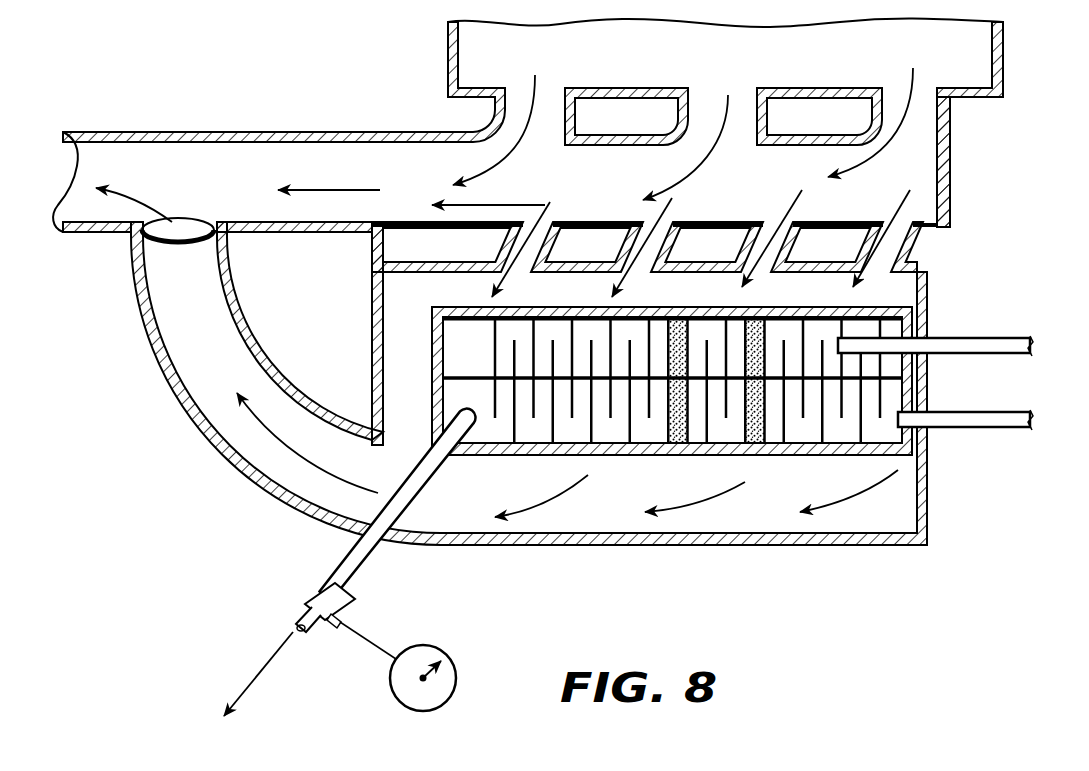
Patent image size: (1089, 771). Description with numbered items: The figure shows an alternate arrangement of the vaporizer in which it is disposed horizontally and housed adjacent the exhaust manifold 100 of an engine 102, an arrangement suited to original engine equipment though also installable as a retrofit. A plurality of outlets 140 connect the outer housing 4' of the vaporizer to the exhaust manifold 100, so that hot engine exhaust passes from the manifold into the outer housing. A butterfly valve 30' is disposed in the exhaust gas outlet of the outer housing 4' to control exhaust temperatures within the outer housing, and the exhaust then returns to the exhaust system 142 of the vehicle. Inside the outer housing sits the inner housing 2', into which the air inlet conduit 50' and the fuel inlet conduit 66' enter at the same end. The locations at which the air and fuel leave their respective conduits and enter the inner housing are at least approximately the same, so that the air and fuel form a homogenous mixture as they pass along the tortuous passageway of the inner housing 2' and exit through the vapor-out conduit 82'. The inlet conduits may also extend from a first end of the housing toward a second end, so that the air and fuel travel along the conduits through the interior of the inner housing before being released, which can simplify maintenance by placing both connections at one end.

The engine 102 is at (1005, 65).
The exhaust manifold 100 is at (950, 152).
The outlets 140 is at (767, 228).
The butterfly valve 30' is at (299, 187).
The exhaust system 142 is at (91, 265).
The inner housing 2' is at (672, 408).
The air inlet conduit 50' is at (962, 371).
The fuel inlet conduit 66' is at (985, 446).
The outer housing 4' is at (554, 401).
The vapor-out conduit 82' is at (350, 562).